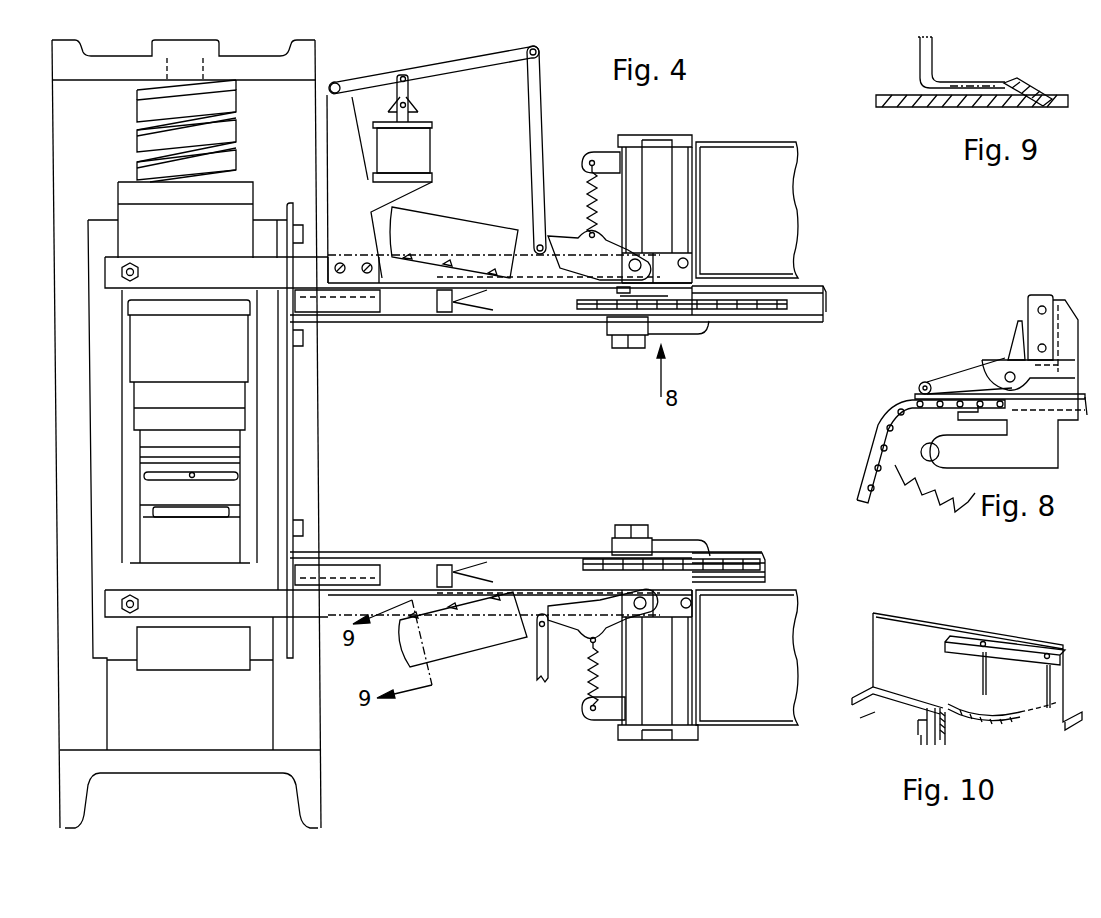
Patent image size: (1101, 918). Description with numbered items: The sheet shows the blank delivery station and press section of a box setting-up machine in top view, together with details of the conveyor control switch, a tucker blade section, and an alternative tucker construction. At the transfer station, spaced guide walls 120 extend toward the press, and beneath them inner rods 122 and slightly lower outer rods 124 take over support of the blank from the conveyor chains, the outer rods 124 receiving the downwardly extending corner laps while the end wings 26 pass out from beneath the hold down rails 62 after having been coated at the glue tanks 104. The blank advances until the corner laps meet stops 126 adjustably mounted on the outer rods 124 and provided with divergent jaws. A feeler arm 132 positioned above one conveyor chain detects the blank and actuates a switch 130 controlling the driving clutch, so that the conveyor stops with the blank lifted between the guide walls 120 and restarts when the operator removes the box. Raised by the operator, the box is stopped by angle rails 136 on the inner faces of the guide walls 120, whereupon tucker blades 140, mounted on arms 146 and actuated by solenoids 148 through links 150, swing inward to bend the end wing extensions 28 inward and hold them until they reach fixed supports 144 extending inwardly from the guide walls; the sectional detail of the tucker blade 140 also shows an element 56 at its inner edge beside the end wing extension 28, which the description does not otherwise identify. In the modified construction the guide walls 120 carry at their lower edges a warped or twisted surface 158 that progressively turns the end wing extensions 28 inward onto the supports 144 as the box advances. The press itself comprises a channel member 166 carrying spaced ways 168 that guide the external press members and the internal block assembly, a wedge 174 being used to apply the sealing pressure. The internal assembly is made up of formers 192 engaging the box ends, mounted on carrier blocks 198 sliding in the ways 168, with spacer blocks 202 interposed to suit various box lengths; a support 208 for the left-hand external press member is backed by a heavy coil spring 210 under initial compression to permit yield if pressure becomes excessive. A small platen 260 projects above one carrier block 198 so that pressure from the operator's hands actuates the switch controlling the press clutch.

In FIG. 4, the glue tanks 104 is at (790, 196).
In FIG. 4, the guide walls 120 is at (190, 285).
In FIG. 10, the guide walls 120 is at (893, 618).
In FIG. 4, the rods 122 is at (513, 322).
In FIG. 4, the rods 124 is at (393, 292).
In FIG. 4, the stops 126 is at (465, 312).
In FIG. 4, the tucker blades 140 is at (447, 226).
In FIG. 9, the tucker blades 140 is at (920, 106).
In FIG. 4, the fixed supports 144 is at (348, 315).
In FIG. 10, the fixed supports 144 is at (956, 713).
In FIG. 4, the arms 146 is at (580, 243).
In FIG. 4, the solenoids 148 is at (430, 146).
In FIG. 4, the links 150 is at (532, 100).
In FIG. 4, the channel member 166 is at (55, 404).
In FIG. 4, the ways 168 is at (97, 220).
In FIG. 4, the wedge 174 is at (182, 660).
In FIG. 4, the formers 192 is at (196, 311).
In FIG. 10, the formers 192 is at (870, 692).
In FIG. 4, the carrier blocks 198 is at (200, 501).
In FIG. 4, the spacer blocks 202 is at (205, 406).
In FIG. 4, the support 208 is at (205, 203).
In FIG. 4, the coil spring 210 is at (232, 134).
In FIG. 4, the platen 260 is at (145, 478).
In FIG. 9, the end wings 26 is at (924, 58).
In FIG. 9, the end wing extensions 28 is at (982, 84).
In FIG. 9, the tab 56 is at (1010, 78).
In FIG. 8, the switch 130 is at (1040, 294).
In FIG. 8, the feeler arm 132 is at (958, 378).
In FIG. 8, the hold down rails 62 is at (1040, 385).
In FIG. 10, the rails 136 is at (1013, 655).
In FIG. 10, the warped or twisted surface 158 is at (1005, 722).